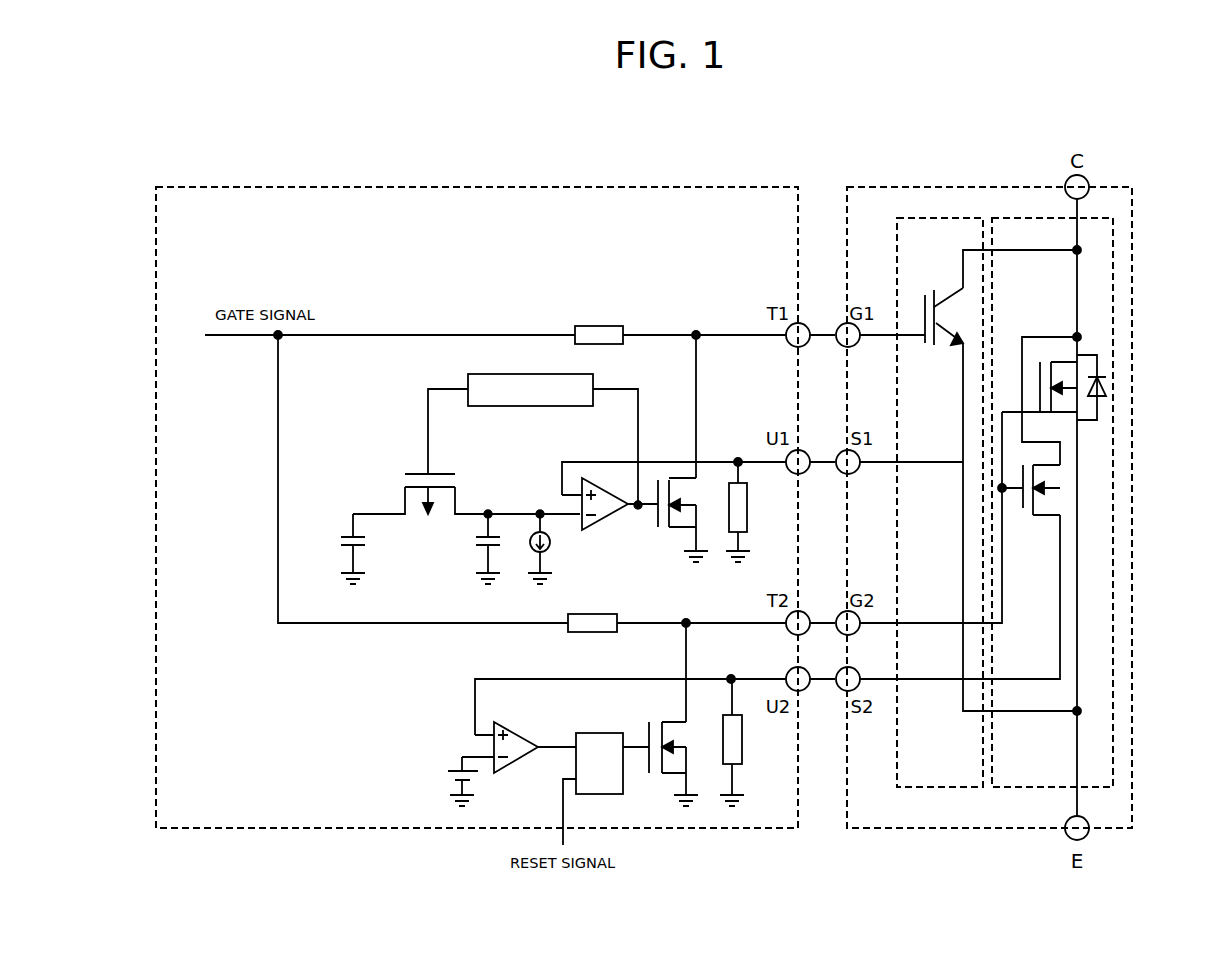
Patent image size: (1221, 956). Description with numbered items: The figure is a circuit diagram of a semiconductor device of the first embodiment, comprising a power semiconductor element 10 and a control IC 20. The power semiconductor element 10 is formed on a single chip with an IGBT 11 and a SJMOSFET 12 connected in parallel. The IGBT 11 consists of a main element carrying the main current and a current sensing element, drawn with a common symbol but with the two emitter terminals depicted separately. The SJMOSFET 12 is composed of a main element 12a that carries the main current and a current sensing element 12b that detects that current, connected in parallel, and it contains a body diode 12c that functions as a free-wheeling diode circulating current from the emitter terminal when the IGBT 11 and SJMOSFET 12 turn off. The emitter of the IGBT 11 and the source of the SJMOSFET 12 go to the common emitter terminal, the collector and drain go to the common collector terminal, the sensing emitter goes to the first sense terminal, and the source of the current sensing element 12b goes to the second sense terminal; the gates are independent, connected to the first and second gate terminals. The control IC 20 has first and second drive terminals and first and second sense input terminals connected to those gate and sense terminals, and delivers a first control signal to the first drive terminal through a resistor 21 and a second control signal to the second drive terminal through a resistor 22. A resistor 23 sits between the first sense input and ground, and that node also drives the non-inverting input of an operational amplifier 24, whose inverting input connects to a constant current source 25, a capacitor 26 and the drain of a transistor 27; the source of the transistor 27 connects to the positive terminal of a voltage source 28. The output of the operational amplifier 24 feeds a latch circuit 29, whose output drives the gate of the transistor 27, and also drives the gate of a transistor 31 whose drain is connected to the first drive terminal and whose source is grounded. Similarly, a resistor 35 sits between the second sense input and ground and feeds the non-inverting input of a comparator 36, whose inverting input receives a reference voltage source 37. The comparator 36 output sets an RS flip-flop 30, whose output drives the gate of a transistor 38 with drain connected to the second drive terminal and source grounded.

The power semiconductor element 10 is at (884, 187).
The IGBT 11 is at (960, 218).
The SJMOSFET 12 is at (1036, 218).
The main element 12a is at (1047, 335).
The current sensing element 12b is at (1060, 482).
The body diode 12c is at (1106, 388).
The control IC 20 is at (510, 187).
The resistor 21 is at (601, 326).
The resistor 22 is at (606, 614).
The resistor 23 is at (748, 507).
The operational amplifier 24 is at (590, 490).
The constant current source 25 is at (552, 543).
The capacitor 26 is at (475, 541).
The transistor 27 is at (440, 474).
The voltage source 28 is at (367, 541).
The latch circuit 29 is at (497, 374).
The RS flip-flop 30 is at (600, 733).
The transistor 31 is at (672, 478).
The resistor 35 is at (742, 740).
The comparator 36 is at (525, 722).
The reference voltage source 37 is at (448, 772).
The transistor 38 is at (652, 722).